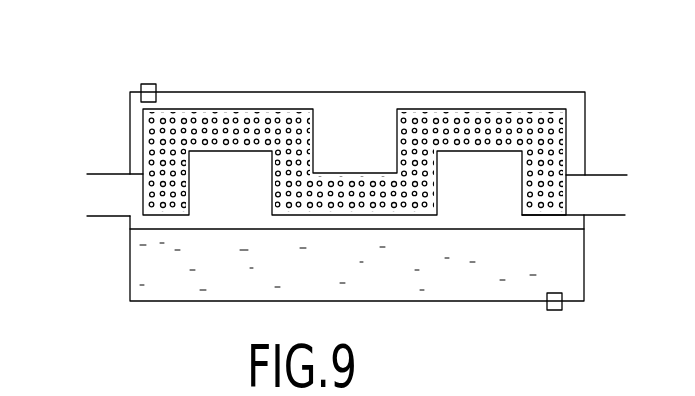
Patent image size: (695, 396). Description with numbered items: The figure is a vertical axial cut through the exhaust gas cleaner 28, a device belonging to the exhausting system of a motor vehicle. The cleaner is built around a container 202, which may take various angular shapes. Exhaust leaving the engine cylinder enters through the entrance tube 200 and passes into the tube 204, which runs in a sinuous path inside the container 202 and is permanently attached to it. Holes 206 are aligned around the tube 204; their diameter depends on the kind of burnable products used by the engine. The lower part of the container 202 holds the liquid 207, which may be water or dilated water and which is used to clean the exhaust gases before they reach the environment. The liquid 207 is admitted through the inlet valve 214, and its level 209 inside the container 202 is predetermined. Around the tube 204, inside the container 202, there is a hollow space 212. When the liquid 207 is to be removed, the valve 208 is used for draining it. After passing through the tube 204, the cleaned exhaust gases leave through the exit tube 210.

The exhaust gas cleaner 28 is at (403, 63).
The entrance tube 200 is at (127, 195).
The container 202 is at (525, 102).
The tube 204 is at (233, 112).
The holes 206 is at (447, 116).
The liquid 207 is at (200, 282).
The valve 208 is at (545, 303).
The level 209 is at (440, 227).
The exit tube 210 is at (580, 175).
The hollow space 212 is at (245, 172).
The inlet valve 214 is at (157, 89).